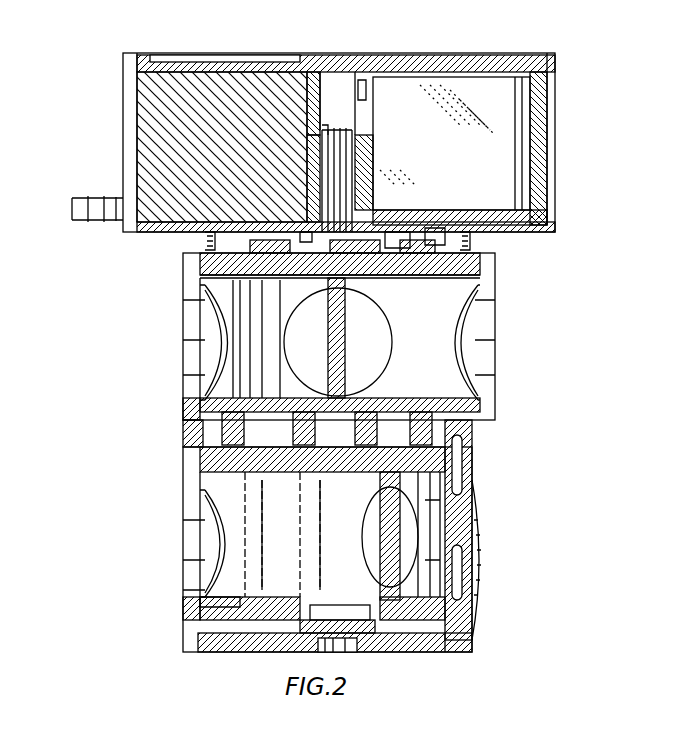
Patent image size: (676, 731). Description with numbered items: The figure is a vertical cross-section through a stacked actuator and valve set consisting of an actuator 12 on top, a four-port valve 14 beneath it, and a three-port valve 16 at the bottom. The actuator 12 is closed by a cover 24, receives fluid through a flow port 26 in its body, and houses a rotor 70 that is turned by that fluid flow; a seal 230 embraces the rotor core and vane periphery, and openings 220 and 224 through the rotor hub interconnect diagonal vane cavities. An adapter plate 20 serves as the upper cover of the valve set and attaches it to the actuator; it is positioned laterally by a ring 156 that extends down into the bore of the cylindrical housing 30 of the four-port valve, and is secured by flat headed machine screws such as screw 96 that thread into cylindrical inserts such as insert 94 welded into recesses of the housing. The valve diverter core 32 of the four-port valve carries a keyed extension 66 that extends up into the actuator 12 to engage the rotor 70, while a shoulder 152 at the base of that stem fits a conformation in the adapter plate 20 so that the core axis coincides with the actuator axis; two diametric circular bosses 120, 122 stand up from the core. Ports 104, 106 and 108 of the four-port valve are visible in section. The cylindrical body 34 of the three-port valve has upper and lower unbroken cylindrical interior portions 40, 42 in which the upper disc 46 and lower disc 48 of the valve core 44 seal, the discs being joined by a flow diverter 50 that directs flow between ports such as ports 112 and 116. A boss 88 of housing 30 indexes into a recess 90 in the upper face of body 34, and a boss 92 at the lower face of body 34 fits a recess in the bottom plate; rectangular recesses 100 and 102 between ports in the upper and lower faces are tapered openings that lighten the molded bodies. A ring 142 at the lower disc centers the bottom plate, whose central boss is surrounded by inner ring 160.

The actuator 12 is at (120, 106).
The four-port valve 14 is at (498, 328).
The three-port valve 16 is at (488, 572).
The adapter plate 20 is at (152, 226).
The cover of the actuator 24 is at (532, 62).
The flow port 26 is at (82, 196).
The cylindrical housing 30 is at (480, 282).
The valve diverter core 32 is at (232, 318).
The cylindrical body 34 is at (474, 472).
The upper unbroken cylindrical portion 40 is at (210, 478).
The lower unbroken cylindrical portion 42 is at (205, 582).
The valve core 44 is at (272, 478).
The upper disc 46 is at (290, 474).
The lower disc 48 is at (282, 597).
The flow diverter 50 is at (400, 518).
The keyed extension 66 is at (340, 128).
The rotor 70 is at (478, 105).
The boss 88 is at (185, 410).
The recess 90 is at (198, 430).
The boss 92 is at (205, 636).
The insert 94 is at (205, 240).
The machine screw 96 is at (470, 232).
The recess 100 is at (465, 447).
The recess 102 is at (462, 600).
The port 104 is at (185, 362).
The port 106 is at (305, 378).
The port 108 is at (497, 375).
The port 112 is at (480, 540).
The port 116 is at (186, 597).
The circular boss 120 is at (398, 228).
The circular boss 122 is at (272, 228).
The ring 142 is at (446, 640).
The shoulder 152 is at (312, 235).
The ring 156 is at (442, 230).
The inner ring 160 is at (392, 650).
The opening 220 is at (366, 98).
The opening 224 is at (312, 82).
The seal 230 is at (522, 152).